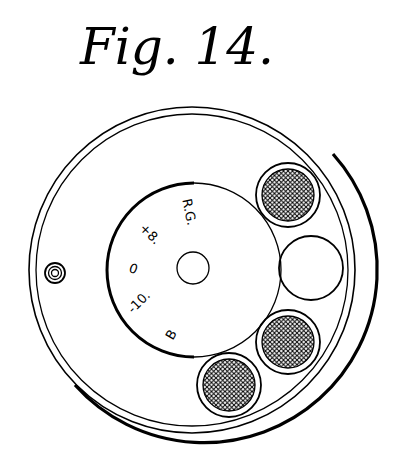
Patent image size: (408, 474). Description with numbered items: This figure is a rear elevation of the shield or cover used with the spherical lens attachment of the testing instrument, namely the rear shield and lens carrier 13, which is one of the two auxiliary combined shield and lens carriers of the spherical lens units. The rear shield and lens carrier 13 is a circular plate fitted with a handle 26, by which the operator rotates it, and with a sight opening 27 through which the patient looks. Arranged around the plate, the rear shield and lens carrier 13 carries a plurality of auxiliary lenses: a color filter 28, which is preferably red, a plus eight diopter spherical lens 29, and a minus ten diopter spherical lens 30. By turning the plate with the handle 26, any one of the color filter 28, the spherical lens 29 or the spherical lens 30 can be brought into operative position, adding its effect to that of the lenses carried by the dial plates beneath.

The rear shield and lens carrier 13 is at (203, 267).
The handle 26 is at (75, 252).
The sight opening 27 is at (311, 268).
The color filter 28 is at (238, 403).
The plus 8.00 diopter spherical lens 29 is at (300, 357).
The minus 10 diopter spherical lens 30 is at (303, 190).